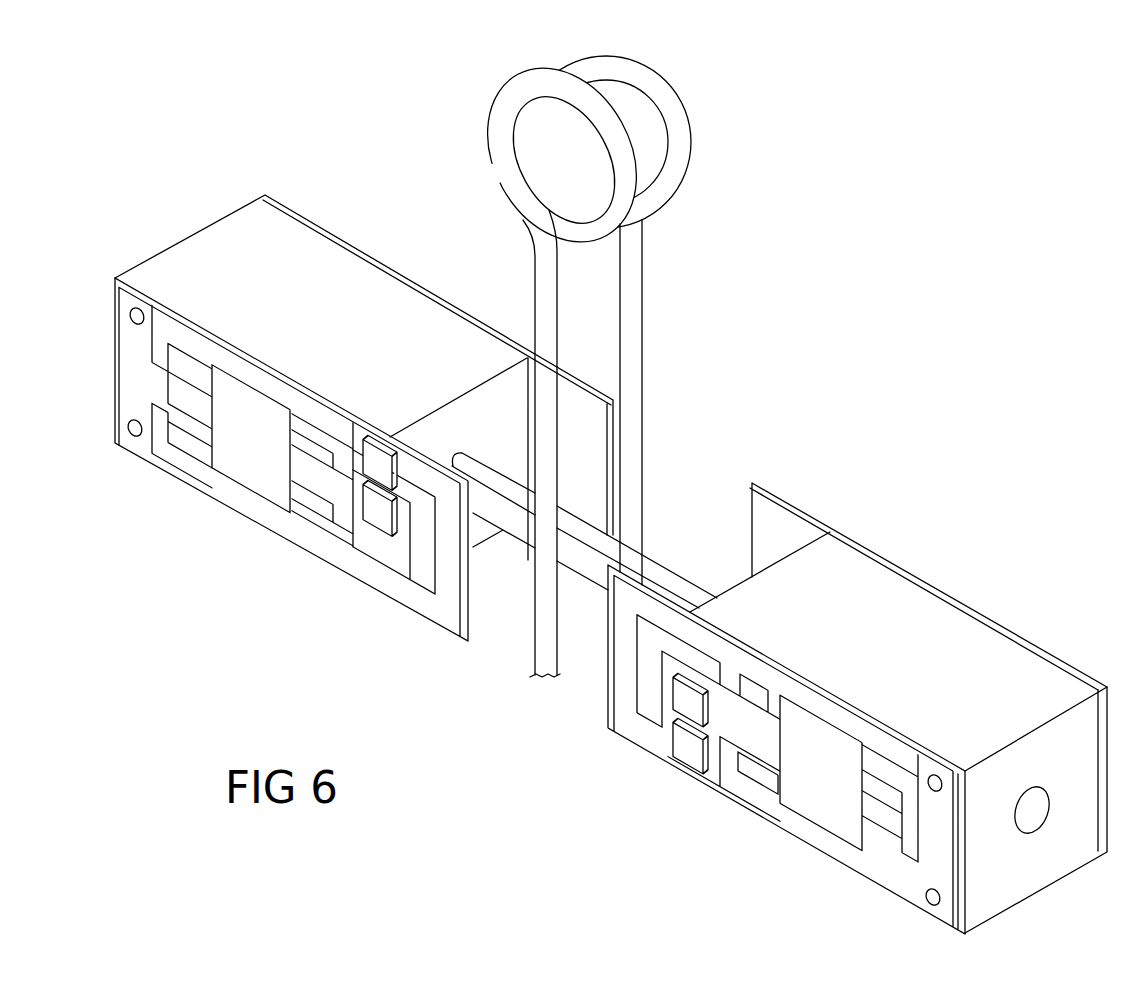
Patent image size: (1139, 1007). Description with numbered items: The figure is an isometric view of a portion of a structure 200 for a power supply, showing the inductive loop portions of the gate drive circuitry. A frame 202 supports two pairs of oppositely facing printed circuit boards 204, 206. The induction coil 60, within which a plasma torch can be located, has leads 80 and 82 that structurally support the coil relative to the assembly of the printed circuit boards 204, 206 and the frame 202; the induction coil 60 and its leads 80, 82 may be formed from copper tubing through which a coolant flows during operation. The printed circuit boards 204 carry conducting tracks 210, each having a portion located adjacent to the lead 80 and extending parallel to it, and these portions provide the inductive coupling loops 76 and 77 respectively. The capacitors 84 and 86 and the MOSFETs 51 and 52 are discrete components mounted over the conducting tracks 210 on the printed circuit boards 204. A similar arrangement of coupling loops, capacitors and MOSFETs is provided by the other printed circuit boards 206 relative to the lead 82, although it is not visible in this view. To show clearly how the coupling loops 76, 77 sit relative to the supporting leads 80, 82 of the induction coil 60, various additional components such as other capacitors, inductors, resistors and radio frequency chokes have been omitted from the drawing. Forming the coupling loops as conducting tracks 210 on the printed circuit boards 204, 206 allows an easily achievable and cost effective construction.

The induction coil 60 is at (764, 126).
The structure 200 is at (805, 362).
The frame 202 is at (983, 637).
The printed circuit boards 204 is at (190, 333).
The printed circuit boards 206 is at (423, 284).
The conducting tracks 210 is at (427, 478).
The MOSFET 51 is at (833, 793).
The MOSFET 52 is at (250, 456).
The inductive coupling loop 76 is at (450, 562).
The inductive coupling loop 77 is at (623, 668).
The lead 80 is at (542, 618).
The lead 82 is at (631, 312).
The capacitor 84 is at (692, 750).
The capacitor 86 is at (377, 510).